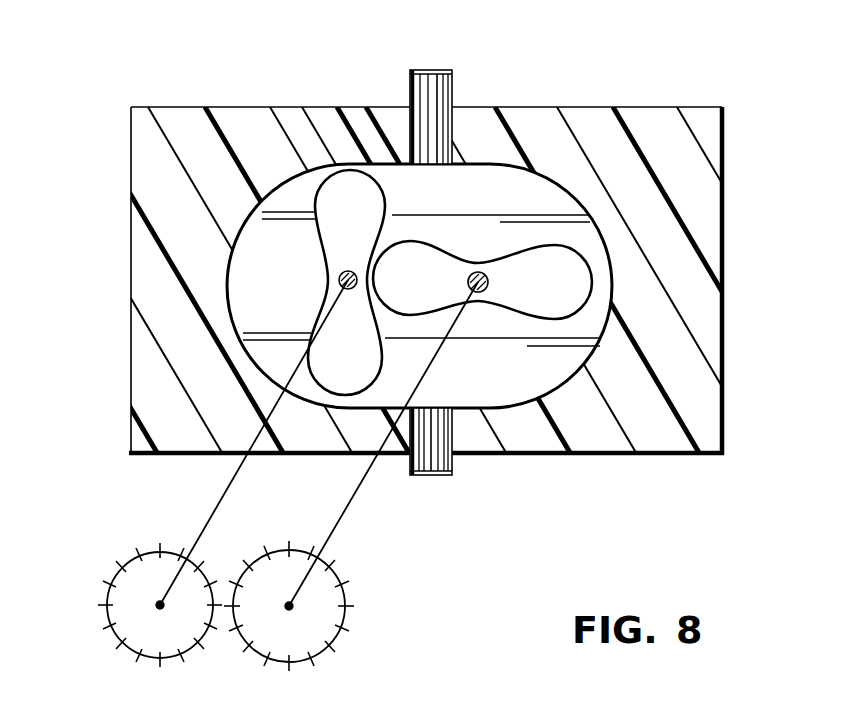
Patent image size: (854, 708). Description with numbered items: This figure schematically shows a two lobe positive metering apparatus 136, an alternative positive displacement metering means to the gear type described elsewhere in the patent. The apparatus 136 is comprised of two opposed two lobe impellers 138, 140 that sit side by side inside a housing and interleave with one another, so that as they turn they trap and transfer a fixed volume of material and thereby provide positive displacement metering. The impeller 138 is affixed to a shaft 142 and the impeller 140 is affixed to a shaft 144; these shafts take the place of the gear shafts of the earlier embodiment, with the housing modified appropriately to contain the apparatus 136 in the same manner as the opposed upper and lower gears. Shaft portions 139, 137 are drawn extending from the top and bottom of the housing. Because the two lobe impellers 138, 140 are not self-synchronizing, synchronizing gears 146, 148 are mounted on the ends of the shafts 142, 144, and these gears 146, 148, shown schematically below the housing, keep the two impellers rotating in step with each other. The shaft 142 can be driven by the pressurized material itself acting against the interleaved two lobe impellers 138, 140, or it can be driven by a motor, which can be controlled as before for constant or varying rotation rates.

The two lobe positive metering apparatus 136 is at (683, 173).
The lower shaft 137 is at (452, 462).
The two lobe impeller 138 is at (348, 242).
The upper shaft 139 is at (410, 73).
The two lobe impeller 140 is at (435, 265).
The shaft 142 is at (228, 487).
The shaft 144 is at (349, 503).
The first timing gear 146 is at (113, 613).
The second timing gear 148 is at (340, 630).